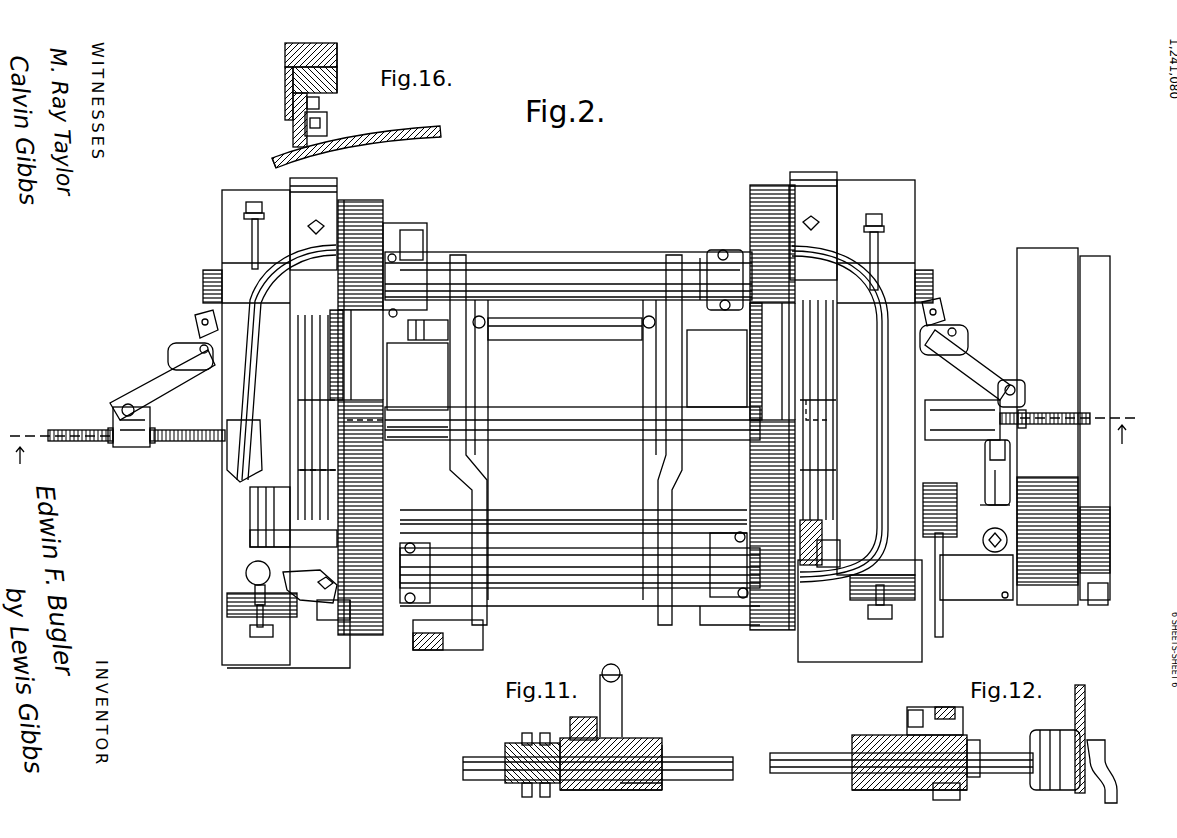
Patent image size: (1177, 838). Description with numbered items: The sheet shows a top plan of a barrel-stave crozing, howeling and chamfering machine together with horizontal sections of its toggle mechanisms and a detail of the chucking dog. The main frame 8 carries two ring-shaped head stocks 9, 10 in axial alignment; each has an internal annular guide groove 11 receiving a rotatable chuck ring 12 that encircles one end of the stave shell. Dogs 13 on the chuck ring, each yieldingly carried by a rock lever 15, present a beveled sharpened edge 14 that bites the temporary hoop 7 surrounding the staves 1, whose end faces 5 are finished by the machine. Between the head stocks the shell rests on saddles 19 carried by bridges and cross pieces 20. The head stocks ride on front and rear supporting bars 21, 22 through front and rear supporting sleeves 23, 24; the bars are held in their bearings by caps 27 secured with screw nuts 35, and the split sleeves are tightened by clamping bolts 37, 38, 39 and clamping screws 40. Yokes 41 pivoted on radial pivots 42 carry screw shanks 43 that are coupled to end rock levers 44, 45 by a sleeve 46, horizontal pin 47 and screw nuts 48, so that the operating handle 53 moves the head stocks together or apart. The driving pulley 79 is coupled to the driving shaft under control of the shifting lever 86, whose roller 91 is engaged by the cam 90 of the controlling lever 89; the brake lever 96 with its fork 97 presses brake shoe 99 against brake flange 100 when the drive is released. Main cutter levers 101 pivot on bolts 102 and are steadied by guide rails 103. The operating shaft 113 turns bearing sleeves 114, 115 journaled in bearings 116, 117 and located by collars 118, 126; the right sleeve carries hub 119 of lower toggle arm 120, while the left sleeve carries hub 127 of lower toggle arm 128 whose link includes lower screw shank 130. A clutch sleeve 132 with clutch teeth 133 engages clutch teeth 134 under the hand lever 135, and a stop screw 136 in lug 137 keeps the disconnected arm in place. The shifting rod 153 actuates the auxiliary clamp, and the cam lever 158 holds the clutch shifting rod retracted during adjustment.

In FIG. 16, the barrel stave 1 is at (402, 128).
In FIG. 2, the end faces 5 is at (1084, 419).
In FIG. 16, the temporary hoops 7 is at (330, 150).
In FIG. 2, the main frame 8 is at (585, 252).
In FIG. 16, the head stock 9 is at (300, 50).
In FIG. 2, the head stock 9 is at (572, 393).
In FIG. 2, the head stock 10 is at (717, 368).
In FIG. 16, the internal annular guide groove 11 is at (337, 54).
In FIG. 16, the chuck ring 12 is at (287, 80).
In FIG. 16, the dogs 13 is at (293, 132).
In FIG. 2, the dogs 13 is at (825, 483).
In FIG. 16, the beveled sharpened edge 14 is at (327, 126).
In FIG. 16, the rock lever 15 is at (319, 104).
In FIG. 2, the saddles 19 is at (458, 412).
In FIG. 2, the bridges and cross pieces 20 is at (485, 364).
In FIG. 2, the front supporting bar 21 is at (510, 266).
In FIG. 2, the rear supporting bar 22 is at (548, 585).
In FIG. 2, the front supporting sleeve 23 is at (412, 276).
In FIG. 2, the rear supporting sleeve 24 is at (420, 640).
In FIG. 2, the cap 27 is at (240, 268).
In FIG. 2, the screw nut 35 is at (254, 230).
In FIG. 2, the clamping bolt 37 is at (395, 252).
In FIG. 2, the clamping bolt 38 is at (410, 543).
In FIG. 2, the clamping bolts 39 is at (723, 250).
In FIG. 2, the clamping screws 40 is at (738, 532).
In FIG. 2, the yokes 41 is at (245, 460).
In FIG. 2, the radial pivots 42 is at (330, 236).
In FIG. 2, the screw shank 43 is at (78, 430).
In FIG. 2, the end rock lever 44 is at (165, 388).
In FIG. 2, the end rock lever 45 is at (968, 376).
In FIG. 2, the sleeve 46 is at (133, 448).
In FIG. 2, the horizontal pin 47 is at (125, 408).
In FIG. 2, the screw nuts 48 is at (112, 442).
In FIG. 2, the operating handle 53 is at (428, 650).
In FIG. 2, the driving pulley 79 is at (1040, 262).
In FIG. 2, the shifting lever 86 is at (1000, 512).
In FIG. 2, the controlling lever 89 is at (1005, 460).
In FIG. 12, the controlling lever 89 is at (1085, 716).
In FIG. 2, the cam 90 is at (983, 548).
In FIG. 12, the cam 90 is at (1105, 796).
In FIG. 2, the roller 91 is at (992, 572).
In FIG. 2, the brake lever 96 is at (1005, 525).
In FIG. 2, the fork 97 is at (1010, 480).
In FIG. 2, the brake shoe 99 is at (1098, 605).
In FIG. 2, the brake flange 100 is at (1098, 392).
In FIG. 2, the main cutter lever 101 is at (256, 451).
In FIG. 2, the longitudinal bolt 102 is at (570, 330).
In FIG. 2, the guide rails 103 is at (320, 380).
In FIG. 2, the operating shaft 113 is at (553, 520).
In FIG. 11, the operating shaft 113 is at (705, 757).
In FIG. 12, the right bearing sleeve 114 is at (965, 775).
In FIG. 11, the left bearing sleeve 115 is at (636, 788).
In FIG. 12, the bearing 116 is at (895, 735).
In FIG. 11, the bearing 117 is at (640, 740).
In FIG. 12, the collar 118 is at (870, 784).
In FIG. 12, the hub 119 is at (975, 740).
In FIG. 12, the lower toggle arm 120 is at (948, 708).
In FIG. 11, the collar 126 is at (662, 788).
In FIG. 11, the hub 127 is at (595, 790).
In FIG. 11, the lower toggle arm 128 is at (570, 735).
In FIG. 11, the lower screw shank 130 is at (585, 716).
In FIG. 2, the clutch sleeve 132 is at (250, 536).
In FIG. 11, the clutch sleeve 132 is at (522, 740).
In FIG. 2, the clutch teeth 133 is at (250, 508).
In FIG. 11, the clutch teeth 133 is at (545, 800).
In FIG. 2, the clutch teeth 134 is at (295, 525).
In FIG. 2, the hand lever 135 is at (250, 562).
In FIG. 11, the stop screw 136 is at (620, 672).
In FIG. 11, the lug 137 is at (622, 694).
In FIG. 12, the shifting rod 153 is at (915, 710).
In FIG. 2, the cam lever 158 is at (943, 628).